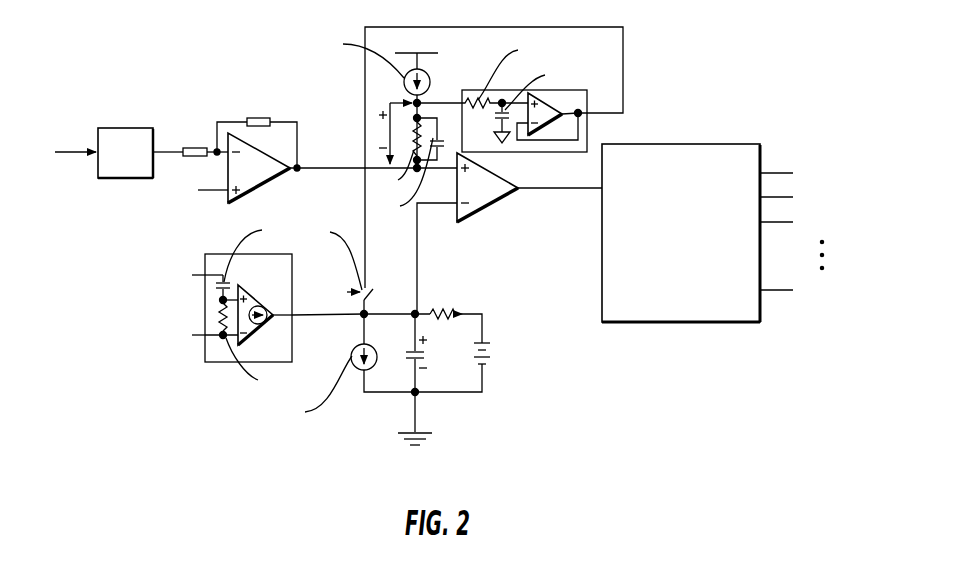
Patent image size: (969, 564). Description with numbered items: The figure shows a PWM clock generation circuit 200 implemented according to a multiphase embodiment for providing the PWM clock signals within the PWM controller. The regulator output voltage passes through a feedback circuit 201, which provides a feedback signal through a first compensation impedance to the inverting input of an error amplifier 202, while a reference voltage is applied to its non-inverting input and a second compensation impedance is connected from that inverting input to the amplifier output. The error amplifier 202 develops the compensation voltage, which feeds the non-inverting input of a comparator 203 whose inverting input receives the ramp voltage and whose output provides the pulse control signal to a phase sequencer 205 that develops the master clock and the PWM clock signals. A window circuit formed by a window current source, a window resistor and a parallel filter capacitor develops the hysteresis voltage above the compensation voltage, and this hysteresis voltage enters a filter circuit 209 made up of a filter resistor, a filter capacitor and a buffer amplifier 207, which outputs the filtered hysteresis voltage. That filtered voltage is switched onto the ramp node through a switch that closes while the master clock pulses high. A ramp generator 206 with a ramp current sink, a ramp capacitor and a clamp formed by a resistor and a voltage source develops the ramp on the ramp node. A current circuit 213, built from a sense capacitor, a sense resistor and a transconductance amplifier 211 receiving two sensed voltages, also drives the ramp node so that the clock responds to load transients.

The PWM clock generation circuit 200 is at (758, 56).
The feedback circuit 201 is at (140, 169).
The error amplifier 202 is at (263, 179).
The comparator 203 is at (497, 195).
The phase sequencer 205 is at (697, 261).
The ramp generator 206 is at (483, 289).
The buffer amplifier 207 is at (558, 105).
The filter circuit 209 is at (590, 137).
The transconductance amplifier 211 is at (277, 284).
The current circuit 213 is at (222, 363).